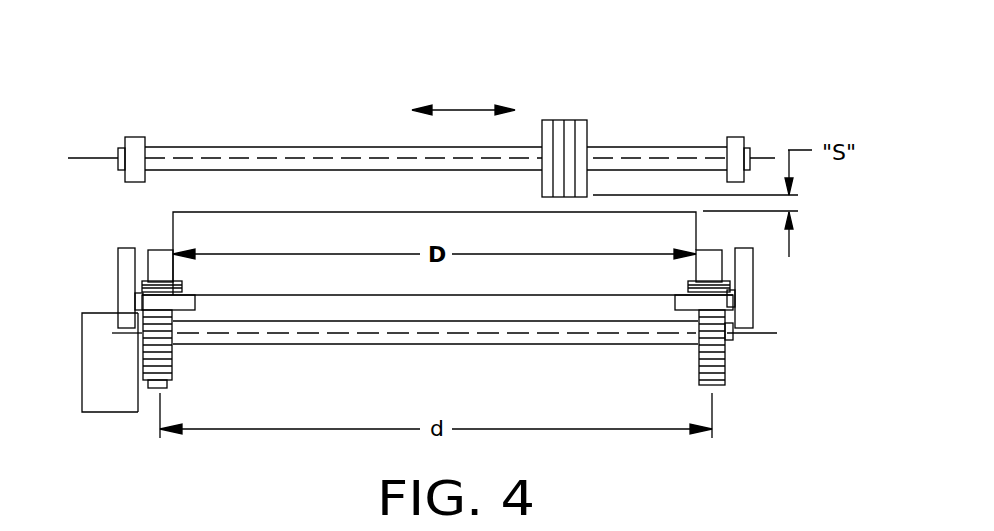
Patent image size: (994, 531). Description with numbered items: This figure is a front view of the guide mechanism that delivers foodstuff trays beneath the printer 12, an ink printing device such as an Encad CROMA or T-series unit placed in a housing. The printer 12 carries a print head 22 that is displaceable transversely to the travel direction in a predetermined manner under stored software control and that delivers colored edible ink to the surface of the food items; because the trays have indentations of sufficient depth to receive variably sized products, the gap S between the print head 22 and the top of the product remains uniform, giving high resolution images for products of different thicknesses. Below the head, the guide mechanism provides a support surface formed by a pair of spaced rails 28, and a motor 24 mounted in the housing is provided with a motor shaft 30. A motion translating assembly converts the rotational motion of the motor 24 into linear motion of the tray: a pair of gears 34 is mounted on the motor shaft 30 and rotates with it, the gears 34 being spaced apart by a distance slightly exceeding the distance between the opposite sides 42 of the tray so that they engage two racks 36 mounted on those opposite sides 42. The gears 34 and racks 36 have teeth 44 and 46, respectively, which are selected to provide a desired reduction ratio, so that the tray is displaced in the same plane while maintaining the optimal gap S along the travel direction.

The printer 12 is at (793, 108).
The print head 22 is at (565, 135).
The motor 24 is at (112, 398).
The spaced rails 28 is at (122, 262).
The motor shaft 30 is at (448, 337).
The gears 34 is at (160, 385).
The racks 36 is at (157, 270).
The opposite sides of the tray 42 is at (173, 228).
The gear teeth 44 is at (155, 387).
The rack teeth 46 is at (708, 282).